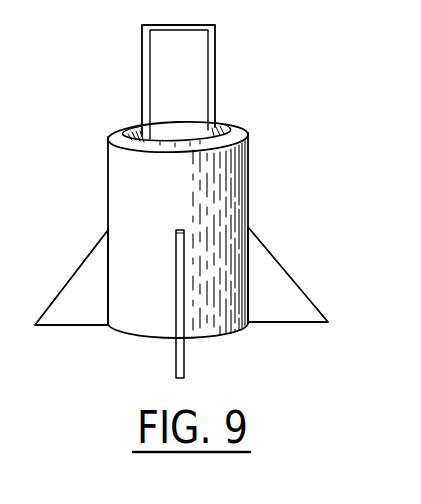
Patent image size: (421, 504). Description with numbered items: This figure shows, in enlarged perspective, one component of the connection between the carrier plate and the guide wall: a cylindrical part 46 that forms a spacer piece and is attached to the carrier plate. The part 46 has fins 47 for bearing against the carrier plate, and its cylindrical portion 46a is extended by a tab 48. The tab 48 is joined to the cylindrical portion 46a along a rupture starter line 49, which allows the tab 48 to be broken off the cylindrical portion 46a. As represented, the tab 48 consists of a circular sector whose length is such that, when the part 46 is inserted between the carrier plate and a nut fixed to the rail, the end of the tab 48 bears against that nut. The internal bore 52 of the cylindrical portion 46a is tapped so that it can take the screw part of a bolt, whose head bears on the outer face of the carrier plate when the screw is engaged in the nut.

The cylindrical part 46 is at (111, 355).
The cylindrical portion 46a is at (220, 202).
The fins 47 is at (63, 284).
The tab 48 is at (215, 65).
The rupture starter line 49 is at (224, 122).
The internal bore 52 is at (133, 132).